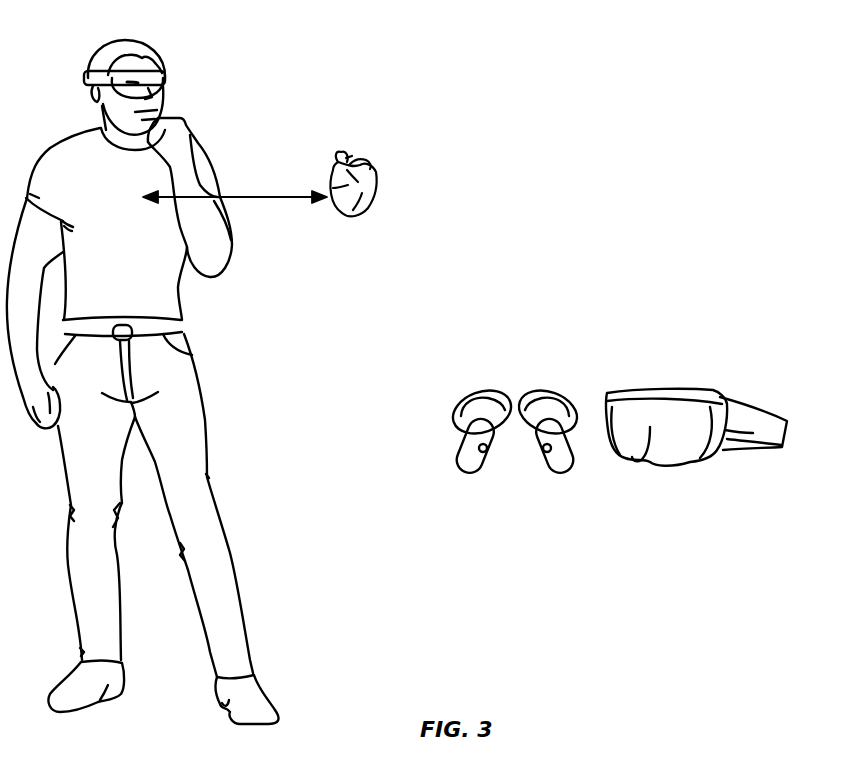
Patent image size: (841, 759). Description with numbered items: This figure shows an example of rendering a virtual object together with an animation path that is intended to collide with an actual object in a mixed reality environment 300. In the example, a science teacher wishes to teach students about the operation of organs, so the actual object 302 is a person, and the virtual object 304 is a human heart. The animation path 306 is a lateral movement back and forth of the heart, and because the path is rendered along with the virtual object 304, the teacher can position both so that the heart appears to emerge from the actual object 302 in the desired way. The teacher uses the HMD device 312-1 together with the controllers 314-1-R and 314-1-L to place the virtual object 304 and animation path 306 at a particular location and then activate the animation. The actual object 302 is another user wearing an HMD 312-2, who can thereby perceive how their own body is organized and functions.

The mixed reality environment 300 is at (718, 155).
The actual object 302 is at (143, 48).
The virtual object 304 is at (365, 162).
The animation path 306 is at (247, 196).
The HMD device 312-1 is at (728, 396).
The HMD 312-2 is at (169, 78).
The controller 314-1-L is at (463, 390).
The controller 314-1-R is at (545, 390).